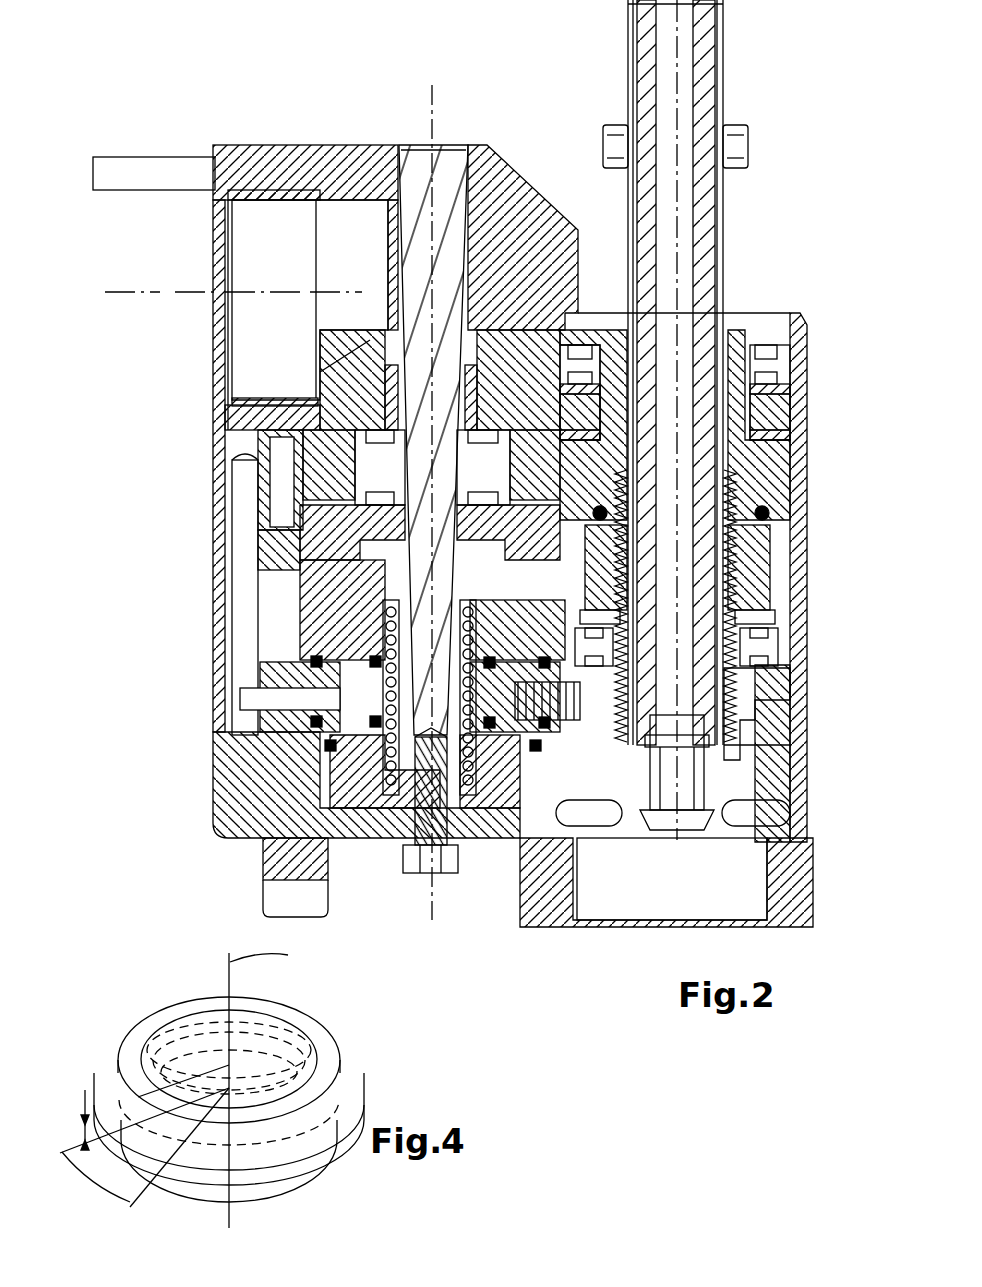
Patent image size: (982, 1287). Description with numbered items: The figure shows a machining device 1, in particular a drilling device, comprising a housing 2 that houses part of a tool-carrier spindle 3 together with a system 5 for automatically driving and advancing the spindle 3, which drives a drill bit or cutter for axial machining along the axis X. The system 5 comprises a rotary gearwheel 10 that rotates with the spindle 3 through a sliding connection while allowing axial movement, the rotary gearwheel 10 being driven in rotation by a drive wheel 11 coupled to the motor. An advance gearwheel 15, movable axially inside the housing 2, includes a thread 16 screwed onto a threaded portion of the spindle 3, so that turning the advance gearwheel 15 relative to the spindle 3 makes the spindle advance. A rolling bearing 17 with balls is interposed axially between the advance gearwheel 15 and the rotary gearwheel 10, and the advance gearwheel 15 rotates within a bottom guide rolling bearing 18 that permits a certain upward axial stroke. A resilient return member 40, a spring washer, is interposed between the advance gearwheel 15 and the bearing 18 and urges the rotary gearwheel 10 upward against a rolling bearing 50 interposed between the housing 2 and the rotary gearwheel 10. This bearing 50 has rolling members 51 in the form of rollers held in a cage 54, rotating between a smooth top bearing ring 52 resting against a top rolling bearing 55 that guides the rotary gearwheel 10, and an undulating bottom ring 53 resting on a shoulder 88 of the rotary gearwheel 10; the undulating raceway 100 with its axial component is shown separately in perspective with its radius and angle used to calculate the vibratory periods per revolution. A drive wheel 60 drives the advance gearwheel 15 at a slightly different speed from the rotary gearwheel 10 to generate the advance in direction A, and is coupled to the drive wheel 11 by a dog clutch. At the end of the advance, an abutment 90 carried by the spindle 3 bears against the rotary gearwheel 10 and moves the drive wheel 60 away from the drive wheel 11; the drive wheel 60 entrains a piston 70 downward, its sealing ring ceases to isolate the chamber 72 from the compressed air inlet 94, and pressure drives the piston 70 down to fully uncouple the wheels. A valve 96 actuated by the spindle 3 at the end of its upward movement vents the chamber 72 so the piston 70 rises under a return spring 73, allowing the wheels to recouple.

In FIG. 2, the machining device 1 is at (98, 248).
In FIG. 2, the housing 2 is at (800, 538).
In FIG. 2, the tool-carrier spindle 3 is at (790, 712).
In FIG. 2, the system for automatically driving and advancing the spindle 5 is at (262, 812).
In FIG. 2, the rotary gearwheel 10 is at (775, 480).
In FIG. 2, the drive wheel 11 is at (355, 393).
In FIG. 2, the advance gearwheel 15 is at (765, 553).
In FIG. 2, the thread 16 is at (725, 575).
In FIG. 2, the rolling bearing 17 is at (768, 510).
In FIG. 2, the bottom guide rolling bearing 18 is at (740, 690).
In FIG. 2, the resilient return member 40 is at (770, 648).
In FIG. 2, the rolling bearing 50 is at (775, 425).
In FIG. 2, the rolling members 51 is at (790, 395).
In FIG. 2, the smooth top bearing ring 52 is at (790, 375).
In FIG. 2, the undulating bottom ring 53 is at (760, 440).
In FIG. 2, the cage 54 is at (578, 405).
In FIG. 2, the top rolling bearing 55 is at (765, 335).
In FIG. 2, the drive wheel 60 is at (300, 540).
In FIG. 2, the piston 70 is at (352, 755).
In FIG. 2, the chamber 72 is at (520, 740).
In FIG. 2, the return spring 73 is at (405, 760).
In FIG. 2, the shoulder 88 is at (775, 470).
In FIG. 2, the abutment 90 is at (750, 145).
In FIG. 2, the compressed air inlet 94 is at (270, 710).
In FIG. 2, the valve 96 is at (560, 725).
In FIG. 4, the undulating raceway 100 is at (105, 1075).